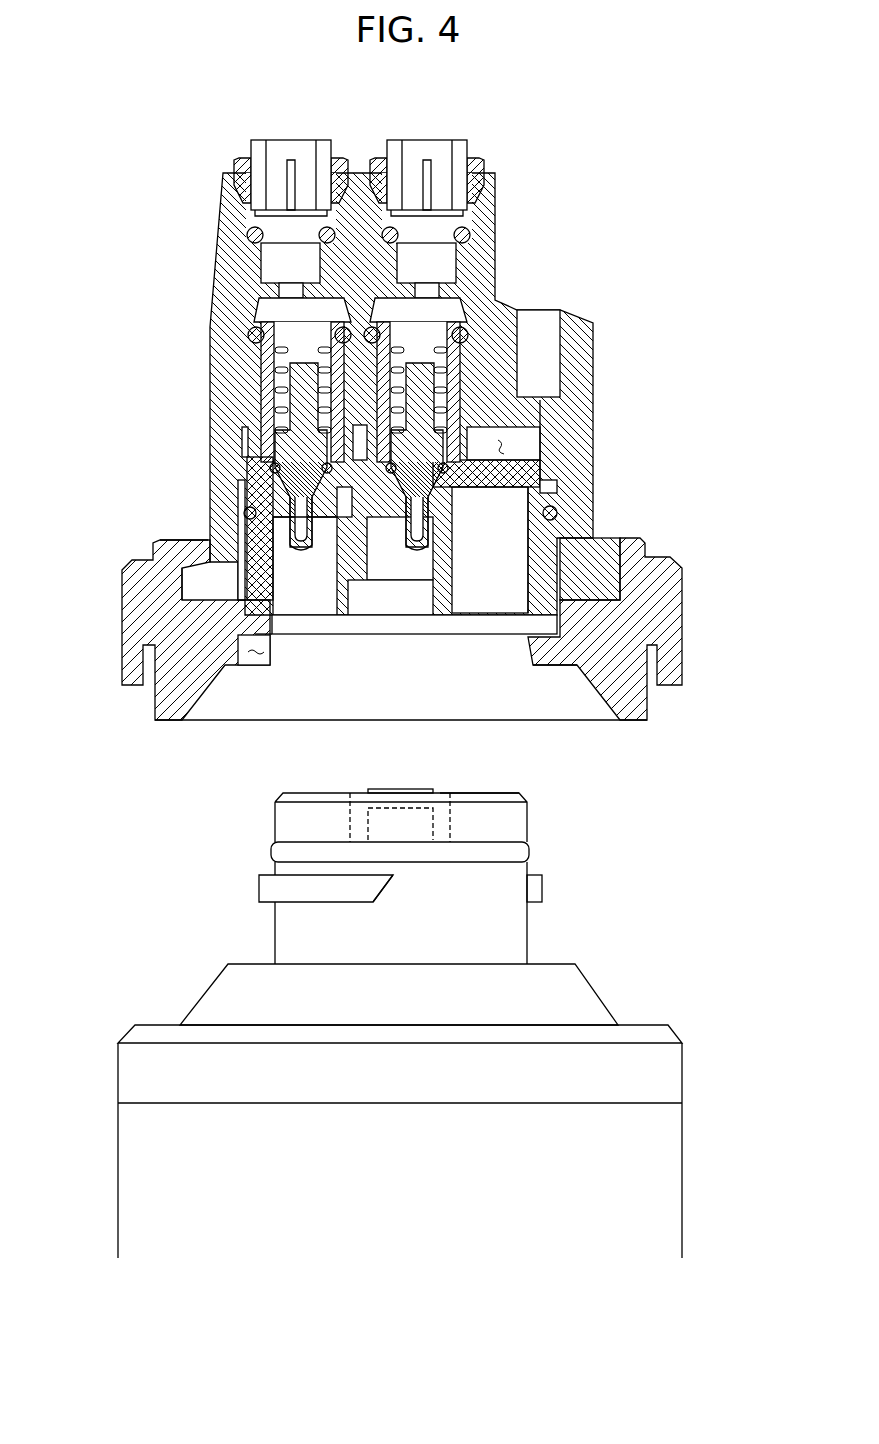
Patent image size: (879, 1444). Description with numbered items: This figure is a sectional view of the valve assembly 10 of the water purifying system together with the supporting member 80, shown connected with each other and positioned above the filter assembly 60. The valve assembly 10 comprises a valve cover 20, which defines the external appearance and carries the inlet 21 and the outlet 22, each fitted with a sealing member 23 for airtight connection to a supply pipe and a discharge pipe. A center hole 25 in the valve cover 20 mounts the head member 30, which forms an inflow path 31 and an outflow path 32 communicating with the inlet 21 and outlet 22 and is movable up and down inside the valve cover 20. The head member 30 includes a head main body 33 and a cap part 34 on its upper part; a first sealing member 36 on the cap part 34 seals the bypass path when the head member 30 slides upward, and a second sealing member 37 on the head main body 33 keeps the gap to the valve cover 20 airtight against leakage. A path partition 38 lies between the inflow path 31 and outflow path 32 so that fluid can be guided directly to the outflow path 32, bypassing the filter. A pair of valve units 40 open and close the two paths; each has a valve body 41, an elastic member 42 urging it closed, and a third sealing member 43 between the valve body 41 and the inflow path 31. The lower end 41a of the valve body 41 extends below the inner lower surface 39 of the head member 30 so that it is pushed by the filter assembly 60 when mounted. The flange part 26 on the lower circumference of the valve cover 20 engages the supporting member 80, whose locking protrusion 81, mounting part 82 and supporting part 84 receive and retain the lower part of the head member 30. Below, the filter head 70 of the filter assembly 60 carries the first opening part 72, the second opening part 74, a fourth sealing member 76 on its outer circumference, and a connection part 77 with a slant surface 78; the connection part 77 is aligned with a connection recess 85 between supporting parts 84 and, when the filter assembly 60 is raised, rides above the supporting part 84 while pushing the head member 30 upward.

The valve assembly 10 is at (378, 350).
The valve cover 20 is at (215, 345).
The inlet 21 is at (266, 150).
The outlet 22 is at (420, 150).
The sealing member 23 is at (250, 236).
The center hole 25 is at (508, 432).
The flange part 26 is at (645, 575).
The head member 30 is at (555, 457).
The inflow path 31 is at (275, 415).
The outflow path 32 is at (555, 395).
The head main body 33 is at (592, 548).
The cap part 34 is at (545, 330).
The first sealing member 36 is at (468, 333).
The second sealing member 37 is at (556, 513).
The path partition 38 is at (345, 636).
The inner lower surface 39 is at (306, 548).
The valve unit 40 is at (175, 513).
The valve body 41 is at (252, 490).
The lower end 41a is at (296, 545).
The elastic member 42 is at (245, 440).
The third sealing member 43 is at (246, 513).
The filter assembly 60 is at (688, 1080).
The filter head 70 is at (401, 878).
The first opening part 72 is at (405, 789).
The second opening part 74 is at (490, 793).
The fourth sealing member 76 is at (529, 852).
The connection part 77 is at (259, 888).
The slant surface 78 is at (382, 903).
The supporting member 80 is at (387, 648).
The locking protrusion 81 is at (205, 547).
The mounting part 82 is at (190, 595).
The supporting part 84 is at (553, 662).
The connection recess 85 is at (255, 666).